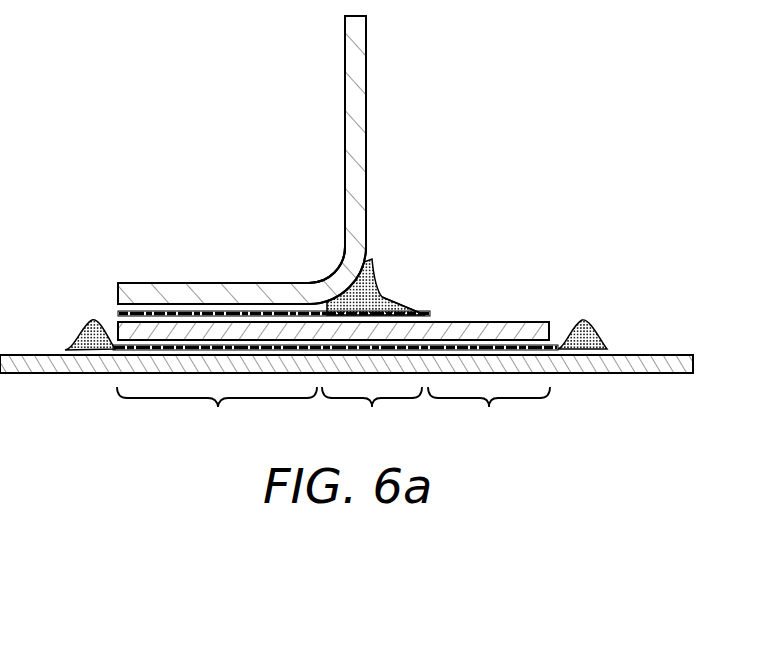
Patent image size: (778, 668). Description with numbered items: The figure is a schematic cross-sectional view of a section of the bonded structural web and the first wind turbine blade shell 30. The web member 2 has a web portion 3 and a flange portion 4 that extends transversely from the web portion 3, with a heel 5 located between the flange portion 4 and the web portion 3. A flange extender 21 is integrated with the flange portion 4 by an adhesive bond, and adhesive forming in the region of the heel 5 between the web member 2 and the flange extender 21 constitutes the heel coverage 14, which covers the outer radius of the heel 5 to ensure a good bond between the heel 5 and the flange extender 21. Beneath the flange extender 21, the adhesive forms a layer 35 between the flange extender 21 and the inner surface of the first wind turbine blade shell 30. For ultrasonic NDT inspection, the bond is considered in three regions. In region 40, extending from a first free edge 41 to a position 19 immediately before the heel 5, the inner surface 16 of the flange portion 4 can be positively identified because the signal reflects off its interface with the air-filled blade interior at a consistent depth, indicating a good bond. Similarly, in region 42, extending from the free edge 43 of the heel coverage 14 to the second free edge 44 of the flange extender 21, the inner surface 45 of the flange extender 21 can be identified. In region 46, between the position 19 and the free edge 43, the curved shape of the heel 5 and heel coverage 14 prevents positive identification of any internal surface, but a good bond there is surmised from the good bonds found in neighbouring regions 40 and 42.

The web member 2 is at (345, 32).
The web portion 3 is at (362, 101).
The flange portion 4 is at (195, 292).
The heel 5 is at (346, 283).
The position immediately before the heel 19 is at (305, 283).
The heel coverage 14 is at (382, 296).
The free edge of the heel coverage 43 is at (425, 314).
The inner surface of the flange portion 16 is at (147, 283).
The flange extender 21 is at (246, 330).
The inner surface of the flange extender 45 is at (496, 322).
The adhesive layer 35 is at (537, 345).
The first free edge 41 is at (118, 290).
The second free edge of the flange extender 44 is at (553, 324).
The first wind turbine blade shell 30 is at (668, 373).
The region 40 is at (217, 410).
The region 46 is at (372, 410).
The region 42 is at (489, 410).